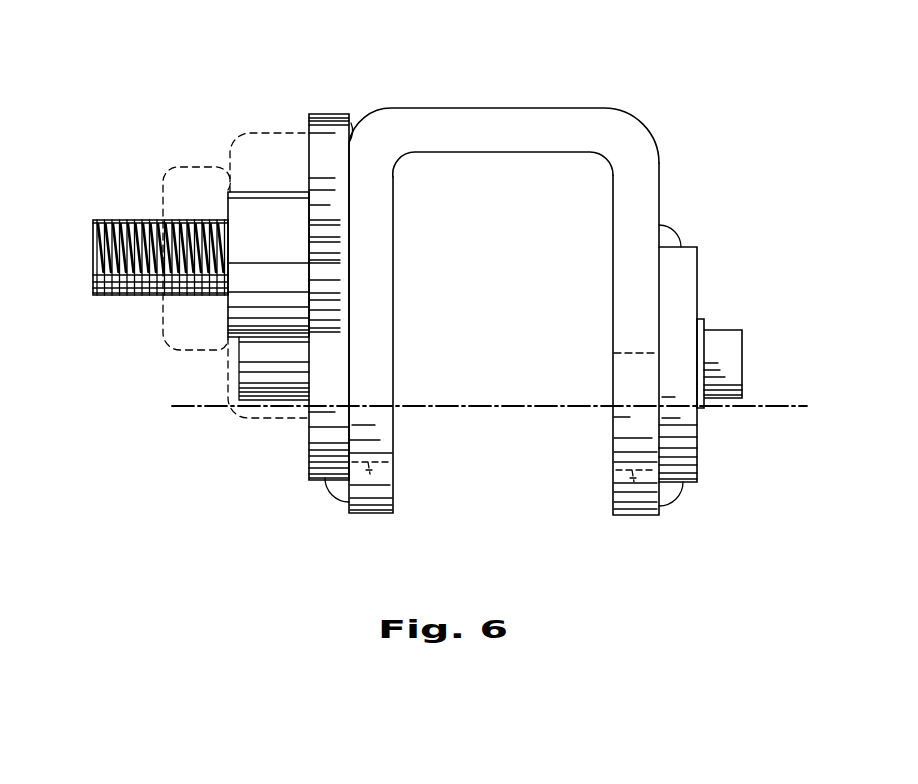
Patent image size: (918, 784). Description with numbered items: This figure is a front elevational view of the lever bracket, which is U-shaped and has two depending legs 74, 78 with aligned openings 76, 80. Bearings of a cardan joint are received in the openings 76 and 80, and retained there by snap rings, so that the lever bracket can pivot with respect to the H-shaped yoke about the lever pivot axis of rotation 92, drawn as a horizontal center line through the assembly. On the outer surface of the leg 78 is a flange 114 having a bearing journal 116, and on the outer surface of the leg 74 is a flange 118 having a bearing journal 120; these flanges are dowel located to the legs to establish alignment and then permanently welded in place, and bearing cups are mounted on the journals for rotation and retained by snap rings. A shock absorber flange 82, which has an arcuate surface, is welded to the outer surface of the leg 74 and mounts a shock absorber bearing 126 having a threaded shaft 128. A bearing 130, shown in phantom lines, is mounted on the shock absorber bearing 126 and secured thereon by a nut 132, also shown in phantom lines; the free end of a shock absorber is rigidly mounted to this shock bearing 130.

The depending leg 74 is at (378, 270).
The opening 76 is at (397, 475).
The depending leg 78 is at (623, 243).
The opening 80 is at (608, 483).
The shock absorber flange 82 is at (344, 113).
The lever pivot axis of rotation 92 is at (789, 407).
The flange 114 is at (695, 437).
The bearing journal 116 is at (737, 363).
The flange 118 is at (309, 443).
The bearing journal 120 is at (262, 382).
The shock absorber bearing 126 is at (255, 192).
The threaded shaft 128 is at (148, 222).
The bearing 130 is at (288, 133).
The nut 132 is at (194, 167).